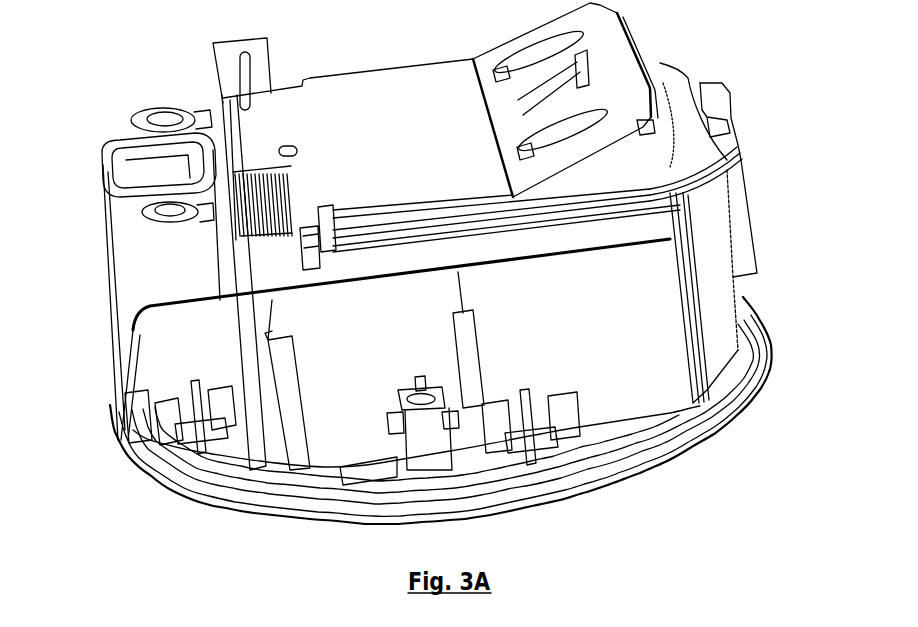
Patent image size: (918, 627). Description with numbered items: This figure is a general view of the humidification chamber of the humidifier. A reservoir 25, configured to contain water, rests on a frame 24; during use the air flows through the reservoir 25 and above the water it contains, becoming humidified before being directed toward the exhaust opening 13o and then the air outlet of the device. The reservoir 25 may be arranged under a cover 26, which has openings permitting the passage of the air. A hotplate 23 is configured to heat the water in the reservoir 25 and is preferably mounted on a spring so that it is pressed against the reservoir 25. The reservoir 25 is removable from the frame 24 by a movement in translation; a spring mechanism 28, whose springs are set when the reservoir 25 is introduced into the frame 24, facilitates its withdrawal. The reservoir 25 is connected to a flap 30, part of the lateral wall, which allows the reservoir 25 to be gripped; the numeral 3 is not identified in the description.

The base 3 is at (677, 471).
The hotplate 23 is at (722, 402).
The frame 24 is at (568, 300).
The reservoir 25 is at (488, 246).
The cover 26 is at (412, 106).
The flap 30 is at (727, 212).
The exhaust opening 13o is at (142, 162).
The spring mechanism 28 is at (190, 110).